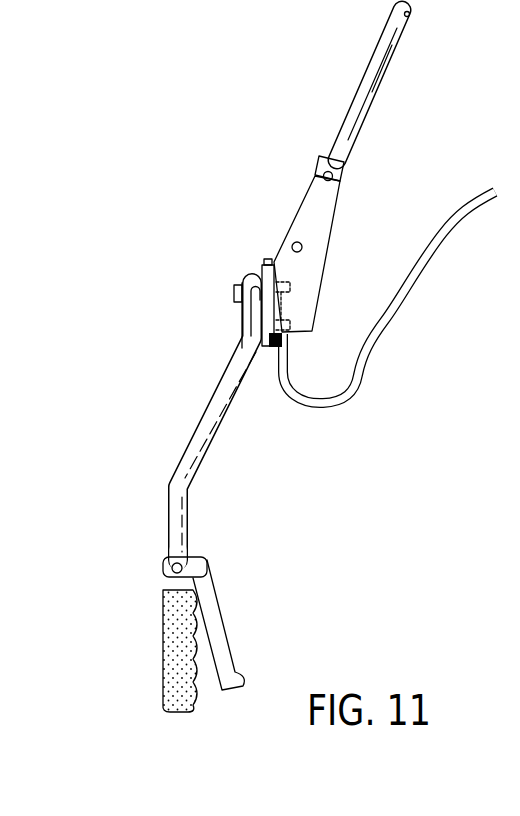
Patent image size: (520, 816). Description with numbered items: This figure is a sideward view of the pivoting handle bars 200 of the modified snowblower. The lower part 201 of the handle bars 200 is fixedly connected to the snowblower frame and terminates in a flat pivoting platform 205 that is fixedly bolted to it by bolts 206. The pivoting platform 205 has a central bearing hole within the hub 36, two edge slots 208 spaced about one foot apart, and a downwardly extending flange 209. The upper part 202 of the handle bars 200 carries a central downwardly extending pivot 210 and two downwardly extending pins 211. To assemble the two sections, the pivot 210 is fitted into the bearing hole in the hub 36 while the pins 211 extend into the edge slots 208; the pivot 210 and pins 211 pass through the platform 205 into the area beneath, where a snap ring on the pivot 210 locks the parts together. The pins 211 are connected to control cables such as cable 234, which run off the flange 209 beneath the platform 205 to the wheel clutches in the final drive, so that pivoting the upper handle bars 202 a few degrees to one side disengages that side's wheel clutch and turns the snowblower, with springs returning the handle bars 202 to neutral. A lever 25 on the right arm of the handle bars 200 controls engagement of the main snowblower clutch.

The handle bars 200 is at (145, 515).
The lower part of the handle bars 201 is at (378, 73).
The upper part of the handle bars 202 is at (190, 446).
The pivoting platform 205 is at (333, 197).
The bolts 206 is at (318, 175).
The edge slots 208 is at (271, 262).
The downwardly extending flange 209 is at (296, 338).
The pivot 210 is at (236, 299).
The pins 211 is at (290, 290).
The control cable 234 is at (398, 303).
The hub 36 is at (248, 274).
The lever 25 is at (210, 600).